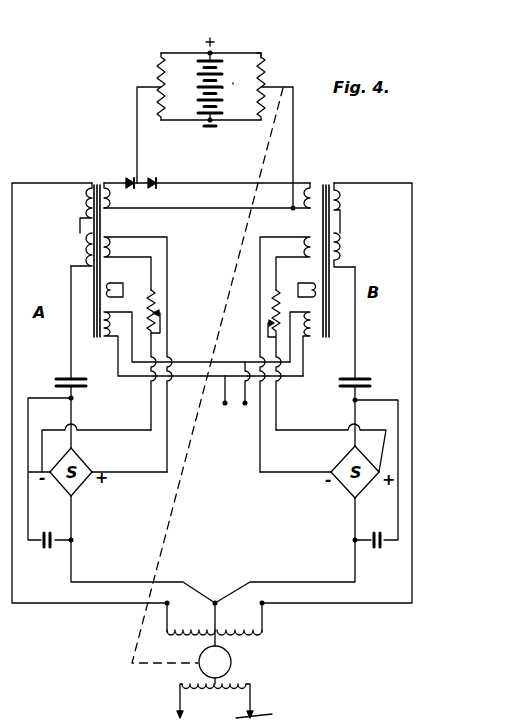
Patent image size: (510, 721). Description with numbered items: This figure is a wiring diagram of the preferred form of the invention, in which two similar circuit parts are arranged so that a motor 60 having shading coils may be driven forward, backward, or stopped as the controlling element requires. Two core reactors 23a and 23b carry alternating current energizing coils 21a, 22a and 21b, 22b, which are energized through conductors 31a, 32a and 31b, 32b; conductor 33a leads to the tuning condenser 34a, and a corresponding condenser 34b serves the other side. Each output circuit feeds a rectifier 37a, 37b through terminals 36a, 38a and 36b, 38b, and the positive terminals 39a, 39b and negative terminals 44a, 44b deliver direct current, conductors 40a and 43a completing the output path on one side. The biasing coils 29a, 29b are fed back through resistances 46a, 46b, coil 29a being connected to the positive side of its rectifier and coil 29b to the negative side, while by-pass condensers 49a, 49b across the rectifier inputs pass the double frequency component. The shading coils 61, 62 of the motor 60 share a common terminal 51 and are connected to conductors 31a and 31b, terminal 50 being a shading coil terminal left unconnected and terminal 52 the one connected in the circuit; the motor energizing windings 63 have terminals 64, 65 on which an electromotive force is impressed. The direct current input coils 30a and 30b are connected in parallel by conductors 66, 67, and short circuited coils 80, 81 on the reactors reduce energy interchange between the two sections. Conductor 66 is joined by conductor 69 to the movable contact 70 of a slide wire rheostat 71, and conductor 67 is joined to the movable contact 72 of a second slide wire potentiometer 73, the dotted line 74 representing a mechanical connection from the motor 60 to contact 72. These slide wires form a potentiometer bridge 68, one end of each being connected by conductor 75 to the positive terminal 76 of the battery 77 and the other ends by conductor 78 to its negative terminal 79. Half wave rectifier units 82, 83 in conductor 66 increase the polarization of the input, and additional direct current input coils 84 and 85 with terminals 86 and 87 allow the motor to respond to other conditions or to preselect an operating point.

The alternating current energizing coil 21a is at (82, 207).
The alternating current energizing coil 21b is at (343, 204).
The alternating current energizing coil 22a is at (83, 251).
The alternating current energizing coil 22b is at (343, 250).
The core reactor 23a is at (86, 182).
The core reactor 23b is at (331, 185).
The biasing coil 29a is at (115, 240).
The biasing coil 29b is at (312, 240).
The D. C. input coil 30a is at (120, 200).
The D. C. input coil 30b is at (305, 188).
The conductor 31a is at (53, 605).
The conductor 31b is at (411, 323).
The conductor 32a is at (130, 582).
The conductor 32b is at (320, 582).
The conductor 33a is at (70, 333).
The condenser 34a is at (73, 379).
The condenser 34b is at (356, 379).
The rectifier terminal 36a is at (66, 454).
The rectifier terminal 36b is at (348, 455).
The rectifier 37a is at (60, 487).
The rectifier 37b is at (343, 488).
The rectifier terminal 38a is at (75, 498).
The rectifier terminal 38b is at (354, 500).
The positive terminal 39a is at (93, 468).
The positive terminal 39b is at (387, 430).
The conductor 40a is at (128, 473).
The conductor 43a is at (120, 430).
The negative terminal 44a is at (45, 468).
The negative terminal 44b is at (331, 472).
The resistance 46a is at (154, 303).
The resistance 46b is at (267, 322).
The by-pass condenser 49a is at (52, 534).
The by-pass condenser 49b is at (380, 550).
The shading coil terminal 50 is at (168, 620).
The common terminal 51 is at (224, 612).
The shading coil terminal 52 is at (264, 603).
The motor 60 is at (232, 662).
The shading coil 61 is at (185, 637).
The shading coil 62 is at (243, 638).
The motor energizing windings 63 is at (232, 683).
The terminal 64 is at (178, 707).
The terminal 65 is at (252, 698).
The conductor 66 is at (205, 183).
The conductor 67 is at (203, 208).
The potentiometer bridge 68 is at (236, 80).
The conductor 69 is at (136, 127).
The movable contact 70 is at (156, 86).
The slide wire rheostat 71 is at (163, 89).
The movable contact 72 is at (268, 86).
The slide wire potentiometer 73 is at (268, 58).
The mechanical connection 74 is at (216, 331).
The conductor 75 is at (187, 52).
The positive terminal 76 is at (213, 52).
The battery 77 is at (223, 88).
The conductor 78 is at (198, 121).
The negative terminal 79 is at (214, 121).
The short circuited coil 80 is at (131, 283).
The short circuited coil 81 is at (300, 288).
The half wave rectifier unit 82 is at (128, 178).
The half wave rectifier unit 83 is at (158, 180).
The D. C. input coil 84 is at (116, 333).
The D. C. input coil 85 is at (322, 340).
The terminal 86 is at (223, 410).
The terminal 87 is at (245, 410).